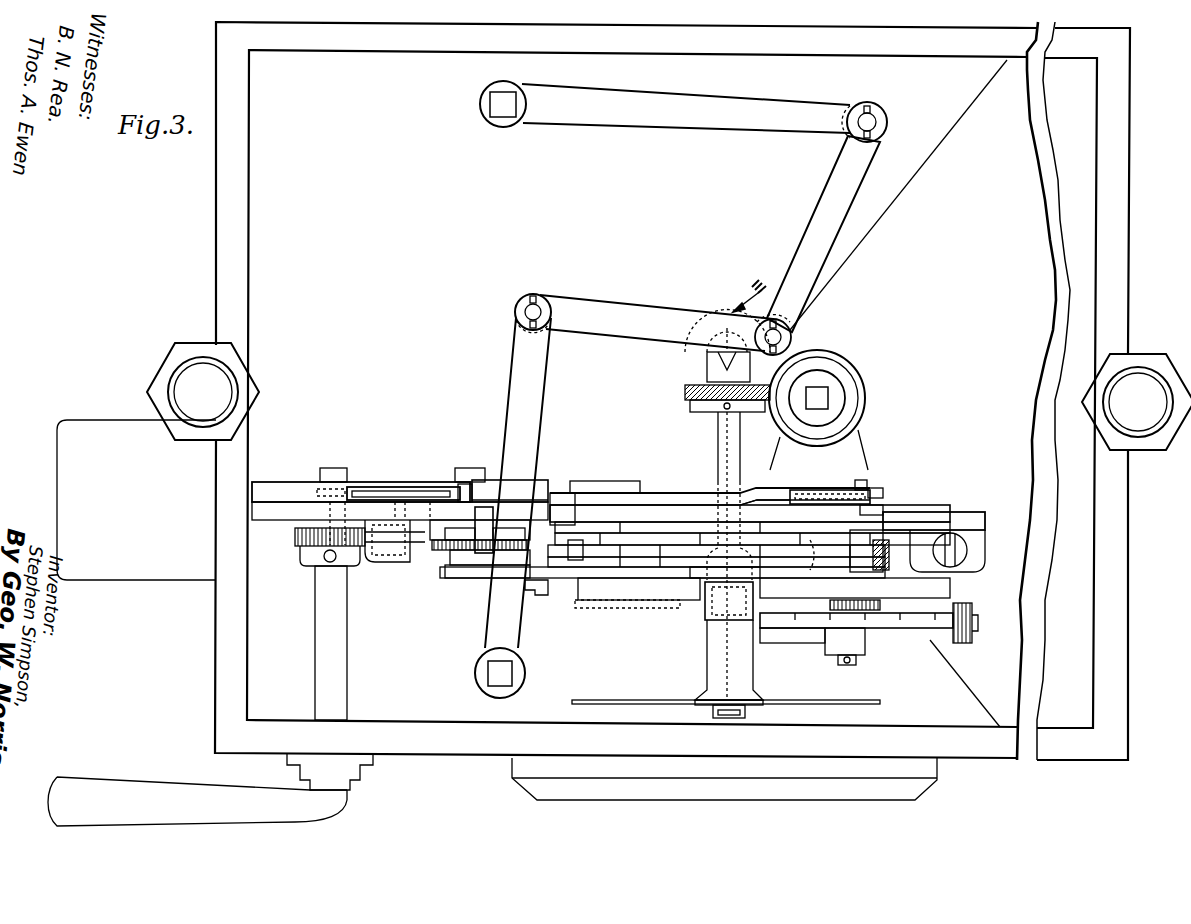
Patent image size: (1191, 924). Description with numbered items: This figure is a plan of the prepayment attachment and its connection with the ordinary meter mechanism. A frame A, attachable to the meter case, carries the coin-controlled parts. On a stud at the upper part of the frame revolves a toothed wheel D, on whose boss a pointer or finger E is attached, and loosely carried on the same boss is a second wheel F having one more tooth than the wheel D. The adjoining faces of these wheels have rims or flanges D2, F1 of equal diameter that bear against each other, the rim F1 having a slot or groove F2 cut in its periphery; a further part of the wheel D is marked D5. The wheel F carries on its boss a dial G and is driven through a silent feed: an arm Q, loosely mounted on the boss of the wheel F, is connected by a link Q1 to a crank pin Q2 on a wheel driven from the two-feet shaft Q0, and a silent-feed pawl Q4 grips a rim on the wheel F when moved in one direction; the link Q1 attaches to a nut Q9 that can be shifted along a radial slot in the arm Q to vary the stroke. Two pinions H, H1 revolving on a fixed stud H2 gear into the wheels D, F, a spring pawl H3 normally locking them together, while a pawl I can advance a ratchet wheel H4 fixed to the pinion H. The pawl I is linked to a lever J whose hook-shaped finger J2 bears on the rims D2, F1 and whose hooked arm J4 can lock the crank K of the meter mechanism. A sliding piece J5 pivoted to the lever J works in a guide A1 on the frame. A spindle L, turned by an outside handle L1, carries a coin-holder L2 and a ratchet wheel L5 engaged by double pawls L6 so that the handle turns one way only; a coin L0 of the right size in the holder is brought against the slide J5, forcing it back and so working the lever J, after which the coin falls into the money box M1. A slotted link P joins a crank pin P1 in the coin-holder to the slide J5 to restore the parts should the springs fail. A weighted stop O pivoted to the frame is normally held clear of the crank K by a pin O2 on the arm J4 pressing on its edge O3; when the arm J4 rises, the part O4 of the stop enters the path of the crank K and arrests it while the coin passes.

The frame A is at (292, 517).
The guide A1 is at (495, 490).
The toothed wheel D is at (672, 515).
The rim or flange D2 is at (625, 570).
The slide plate D5 is at (585, 552).
The pointer or finger E is at (712, 710).
The wheel F is at (655, 576).
The rim or flange F1 is at (678, 576).
The slot or groove F2 is at (585, 596).
The dial G is at (620, 700).
The pinion H is at (505, 538).
The pinion H1 is at (455, 575).
The fixed stud H2 is at (540, 596).
The spring pawl H3 is at (500, 578).
The ratchet wheel H4 is at (455, 532).
The pawl I is at (475, 522).
The lever J is at (620, 496).
The hook shaped finger J2 is at (564, 529).
The hooked arm J4 is at (755, 492).
The sliding piece J5 is at (462, 486).
The crank K is at (803, 345).
The spindle L is at (330, 678).
The handle L1 is at (130, 785).
The coin-holder L2 is at (272, 486).
The coin L0 is at (355, 492).
The ratchet wheel L5 is at (296, 540).
The double pawls L6 is at (408, 551).
The money box M1 is at (136, 500).
The stop O is at (808, 498).
The pin O2 is at (878, 508).
The edge O3 is at (875, 493).
The part of stop O4 is at (860, 484).
The slotted link P is at (388, 488).
The crank pin P1 is at (333, 470).
The arm Q is at (925, 625).
The shaft Q0 is at (735, 452).
The link Q1 is at (789, 648).
The crank pin Q2 is at (876, 580).
The silent-feed pawl Q4 is at (729, 601).
The nut Q9 is at (866, 635).